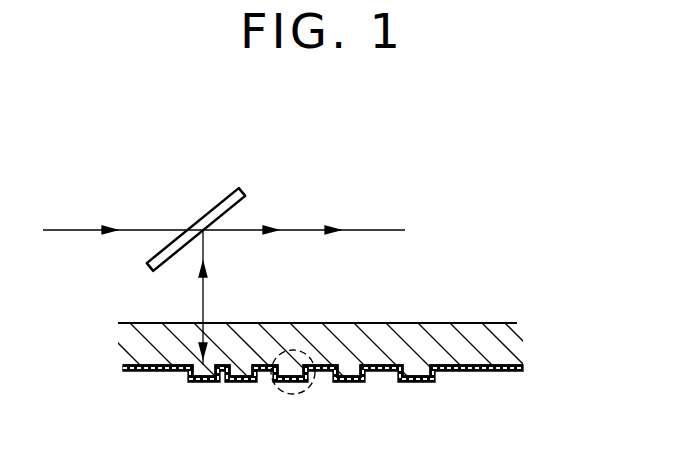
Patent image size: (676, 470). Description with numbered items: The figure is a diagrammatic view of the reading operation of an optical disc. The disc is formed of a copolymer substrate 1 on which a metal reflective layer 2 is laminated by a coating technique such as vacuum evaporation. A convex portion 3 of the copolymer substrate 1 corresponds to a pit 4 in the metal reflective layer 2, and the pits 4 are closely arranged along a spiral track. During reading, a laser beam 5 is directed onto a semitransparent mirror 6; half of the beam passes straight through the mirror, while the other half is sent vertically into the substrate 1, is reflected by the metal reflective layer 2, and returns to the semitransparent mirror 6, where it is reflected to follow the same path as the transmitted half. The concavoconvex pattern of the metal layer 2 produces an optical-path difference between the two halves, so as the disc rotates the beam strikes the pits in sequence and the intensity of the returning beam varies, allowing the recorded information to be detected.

The copolymer substrate 1 is at (447, 323).
The metal reflective layer 2 is at (488, 372).
The convex portion 3 is at (368, 364).
The pit 4 is at (288, 395).
The laser beam 5 is at (80, 230).
The semitransparent mirror 6 is at (240, 194).